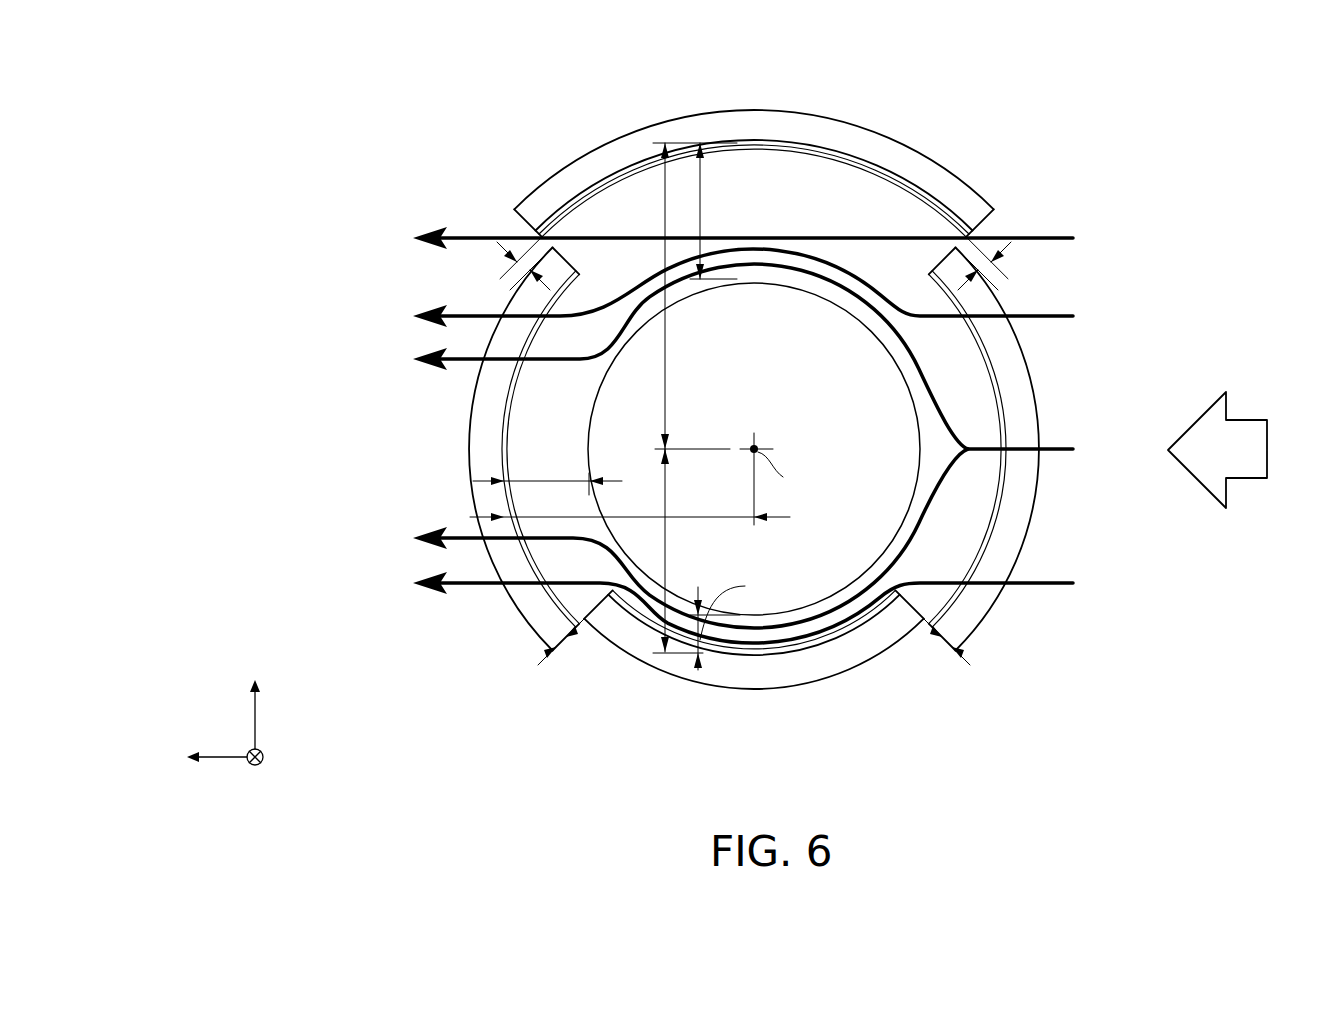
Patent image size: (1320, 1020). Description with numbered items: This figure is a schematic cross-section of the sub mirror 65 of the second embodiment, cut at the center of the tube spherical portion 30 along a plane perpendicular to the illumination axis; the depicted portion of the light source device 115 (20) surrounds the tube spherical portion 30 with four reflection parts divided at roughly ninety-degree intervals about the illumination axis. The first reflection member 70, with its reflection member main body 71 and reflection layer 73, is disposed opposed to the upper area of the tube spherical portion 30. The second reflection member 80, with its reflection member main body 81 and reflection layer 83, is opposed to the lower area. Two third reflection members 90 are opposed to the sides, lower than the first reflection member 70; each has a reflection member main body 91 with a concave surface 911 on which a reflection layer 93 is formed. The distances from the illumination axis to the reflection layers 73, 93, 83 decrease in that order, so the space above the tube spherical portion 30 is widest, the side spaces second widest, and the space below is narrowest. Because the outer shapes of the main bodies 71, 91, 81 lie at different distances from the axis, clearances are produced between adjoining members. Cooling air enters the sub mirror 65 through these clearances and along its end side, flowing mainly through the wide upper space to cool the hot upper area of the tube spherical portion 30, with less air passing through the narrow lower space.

The optical unit / actuator assembly 115 is at (298, 300).
The sub mirror 65 is at (468, 157).
The first reflection member 70 is at (866, 127).
The reflection member main body 71 is at (720, 111).
The reflection layer 73 is at (781, 147).
The second reflection member 80 is at (728, 690).
The reflection member main body 81 is at (830, 680).
The reflection layer 83 is at (776, 652).
The third reflection member 90 is at (382, 330).
The reflection member main body 91 is at (489, 336).
The concave surface 911 is at (505, 388).
The reflection layer 93 is at (506, 436).
The tube spherical portion 30 is at (893, 358).
The rotor 20 is at (754, 449).